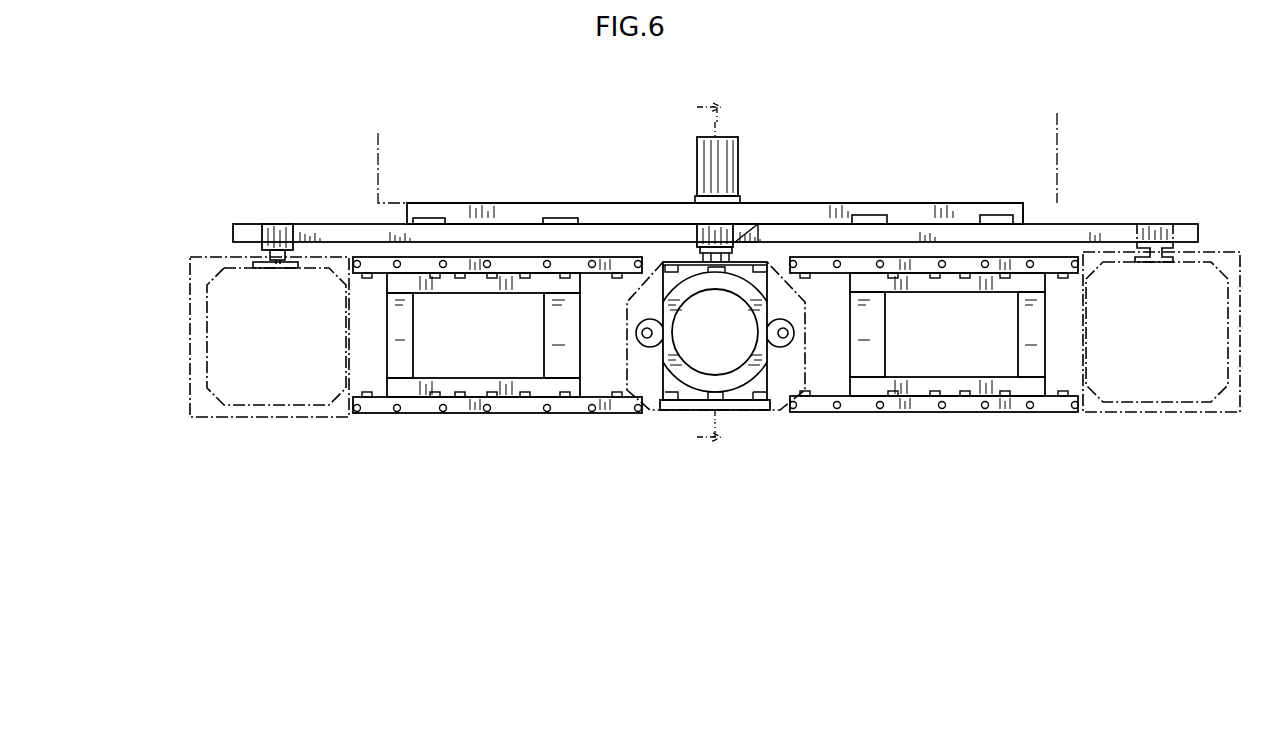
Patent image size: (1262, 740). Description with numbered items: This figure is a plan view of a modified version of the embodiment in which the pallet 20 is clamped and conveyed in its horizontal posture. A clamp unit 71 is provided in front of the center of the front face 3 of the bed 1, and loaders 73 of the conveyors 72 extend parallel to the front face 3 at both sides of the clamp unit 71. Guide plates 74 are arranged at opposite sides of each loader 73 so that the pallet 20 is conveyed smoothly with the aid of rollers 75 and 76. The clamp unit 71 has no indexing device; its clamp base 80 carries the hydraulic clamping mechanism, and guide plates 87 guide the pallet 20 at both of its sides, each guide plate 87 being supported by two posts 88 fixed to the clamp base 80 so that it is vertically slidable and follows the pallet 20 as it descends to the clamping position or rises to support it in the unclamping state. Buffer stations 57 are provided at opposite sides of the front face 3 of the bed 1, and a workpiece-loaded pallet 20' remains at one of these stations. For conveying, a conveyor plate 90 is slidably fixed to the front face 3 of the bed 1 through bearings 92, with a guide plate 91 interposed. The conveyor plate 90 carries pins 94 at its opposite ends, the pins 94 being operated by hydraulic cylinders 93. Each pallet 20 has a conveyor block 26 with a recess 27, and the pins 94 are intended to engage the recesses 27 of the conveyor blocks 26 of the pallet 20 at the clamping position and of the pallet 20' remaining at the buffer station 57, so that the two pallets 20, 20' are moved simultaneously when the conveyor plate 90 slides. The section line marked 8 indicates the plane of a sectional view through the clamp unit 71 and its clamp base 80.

The bed 1 is at (1057, 138).
The front face 3 is at (1040, 205).
The section line 8- 8 is at (709, 271).
The pallet 20 is at (895, 213).
The workpiece-loaded pallet 20' is at (242, 247).
The conveyor block 26 is at (262, 264).
The recess 27 is at (282, 266).
The buffer station 57 is at (190, 266).
The clamp unit 71 is at (742, 385).
The conveyor 72 is at (466, 425).
The loader 73 is at (522, 398).
The guide plate 74 is at (507, 262).
The roller 75 is at (492, 278).
The roller 76 is at (443, 268).
The clamp base 80 is at (633, 357).
The guide plate 87 is at (691, 262).
The post 88 is at (635, 330).
The conveyor plate 90 is at (357, 232).
The guide plate 91 is at (466, 210).
The bearing 92 is at (426, 218).
The hydraulic cylinder 93 is at (276, 235).
The pin 94 is at (284, 252).